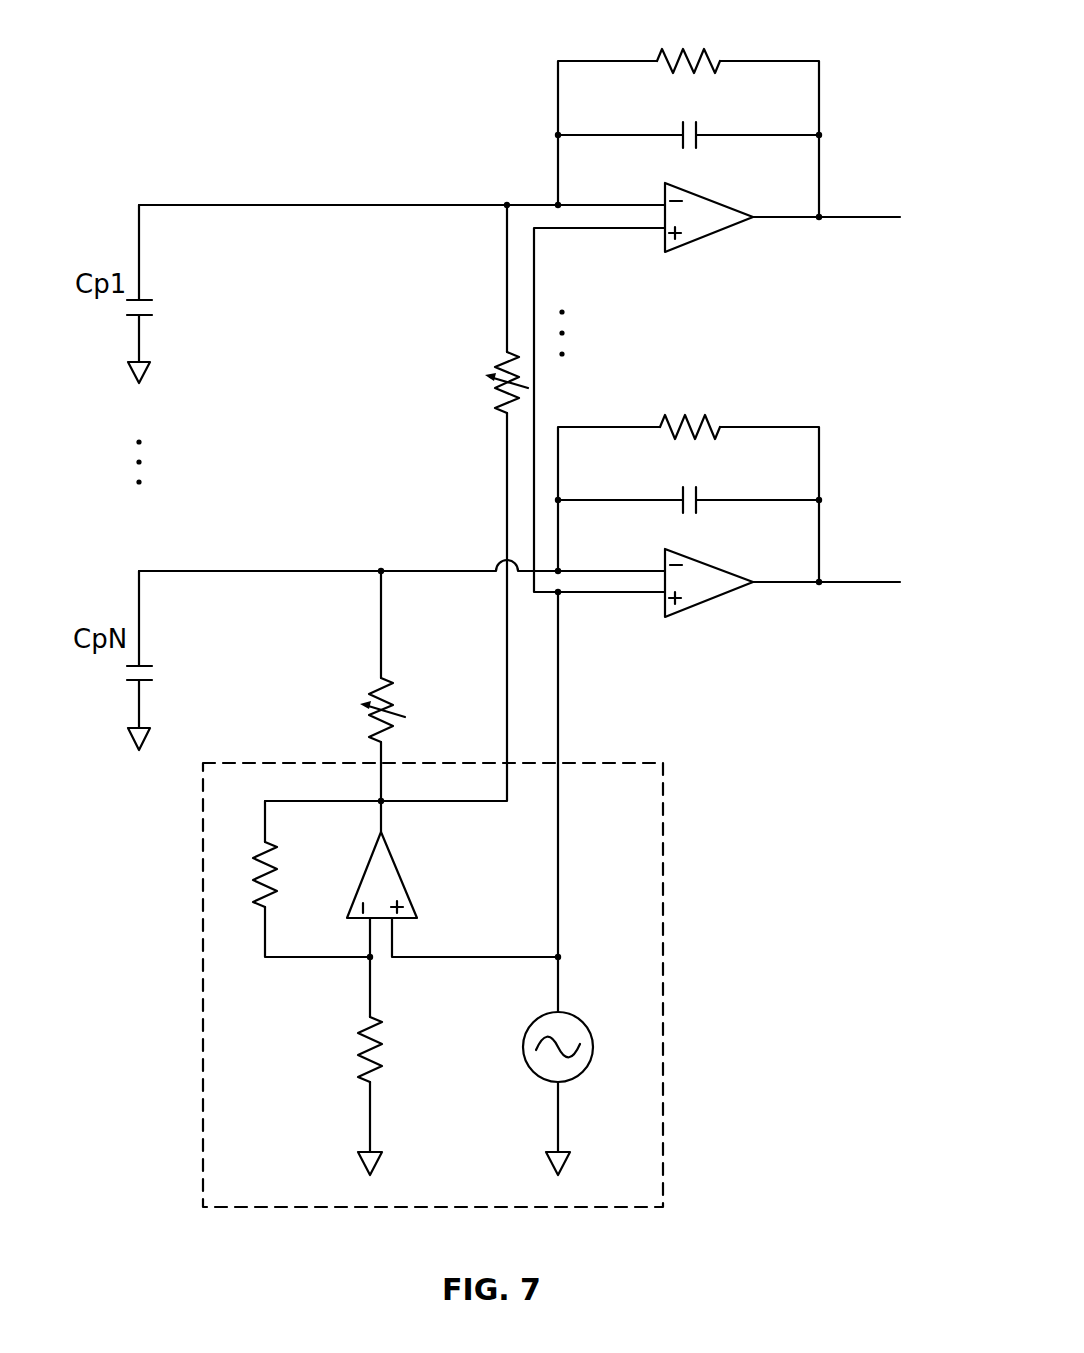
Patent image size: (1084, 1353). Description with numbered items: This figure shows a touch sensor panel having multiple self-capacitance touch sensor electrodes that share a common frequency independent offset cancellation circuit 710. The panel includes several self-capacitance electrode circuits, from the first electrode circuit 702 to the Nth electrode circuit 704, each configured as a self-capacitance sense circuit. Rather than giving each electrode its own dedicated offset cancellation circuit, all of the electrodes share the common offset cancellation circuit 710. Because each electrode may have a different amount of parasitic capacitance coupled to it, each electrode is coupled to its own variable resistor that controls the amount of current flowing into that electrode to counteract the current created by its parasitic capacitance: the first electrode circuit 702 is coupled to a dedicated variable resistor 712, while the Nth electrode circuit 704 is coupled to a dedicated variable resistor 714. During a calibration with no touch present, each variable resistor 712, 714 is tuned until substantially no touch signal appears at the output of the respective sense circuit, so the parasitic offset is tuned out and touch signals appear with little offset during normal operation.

The first electrode circuit 702 is at (829, 35).
The Nth electrode circuit 704 is at (834, 405).
The common frequency independent offset cancellation circuit 710 is at (255, 1210).
The variable resistor 712 is at (502, 350).
The variable resistor 714 is at (386, 680).